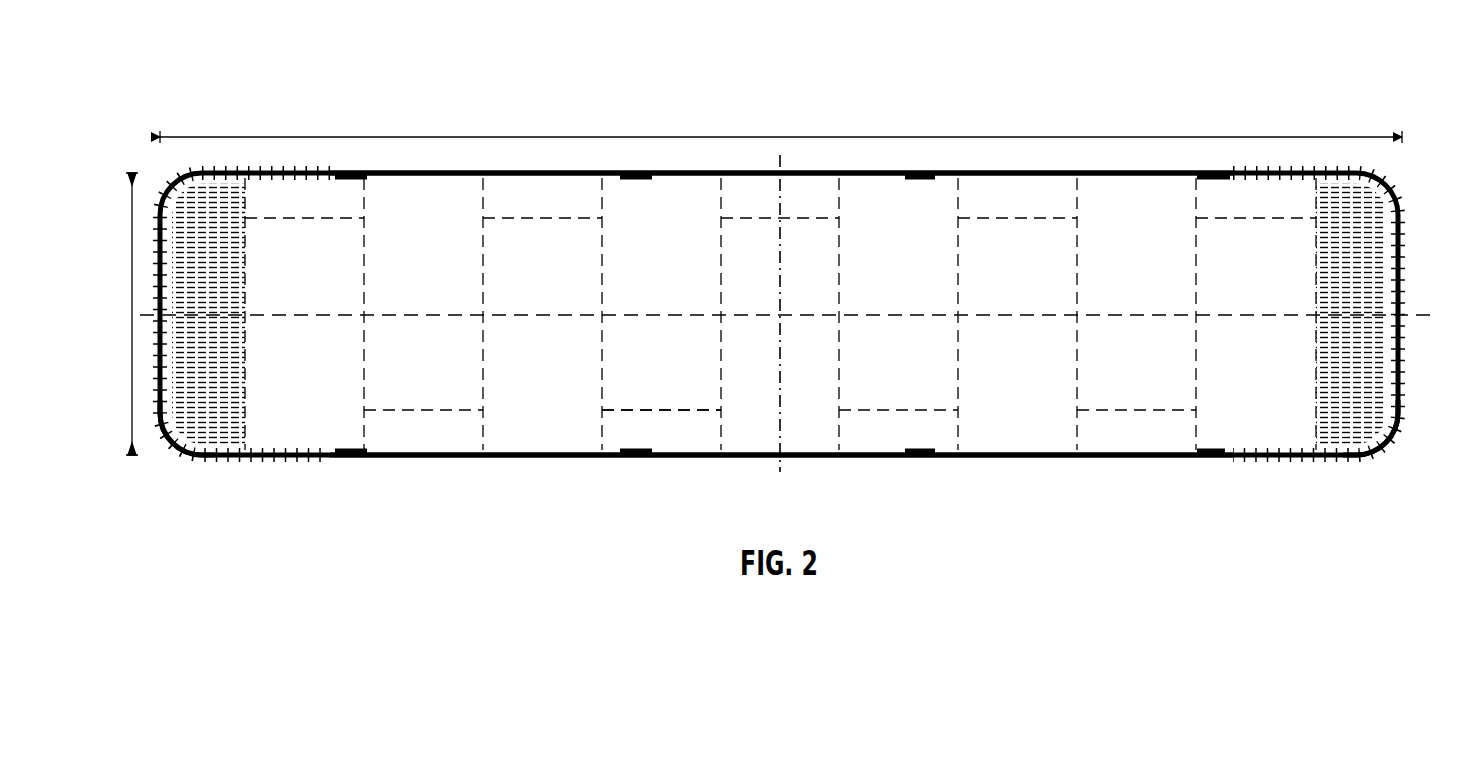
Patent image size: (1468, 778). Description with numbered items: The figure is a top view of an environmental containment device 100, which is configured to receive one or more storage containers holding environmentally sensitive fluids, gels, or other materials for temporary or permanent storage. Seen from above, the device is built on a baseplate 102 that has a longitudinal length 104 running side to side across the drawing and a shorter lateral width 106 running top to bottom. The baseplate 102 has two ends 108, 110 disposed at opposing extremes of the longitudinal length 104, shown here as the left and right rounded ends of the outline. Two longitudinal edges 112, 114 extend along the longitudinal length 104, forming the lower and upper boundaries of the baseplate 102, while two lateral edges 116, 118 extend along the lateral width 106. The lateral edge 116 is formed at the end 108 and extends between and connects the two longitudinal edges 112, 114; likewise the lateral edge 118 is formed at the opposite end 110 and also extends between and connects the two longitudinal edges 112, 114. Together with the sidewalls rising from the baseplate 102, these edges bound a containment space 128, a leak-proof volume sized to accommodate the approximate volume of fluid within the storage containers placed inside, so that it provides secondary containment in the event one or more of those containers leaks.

The environmental containment device 100 is at (198, 82).
The baseplate 102 is at (1020, 410).
The longitudinal length 104 is at (780, 137).
The lateral width 106 is at (132, 315).
The end 108 is at (158, 478).
The end 110 is at (1343, 478).
The longitudinal edge 112 is at (580, 458).
The longitudinal edge 114 is at (505, 177).
The lateral edge 116 is at (182, 447).
The lateral edge 118 is at (1375, 447).
The containment space 128 is at (708, 350).